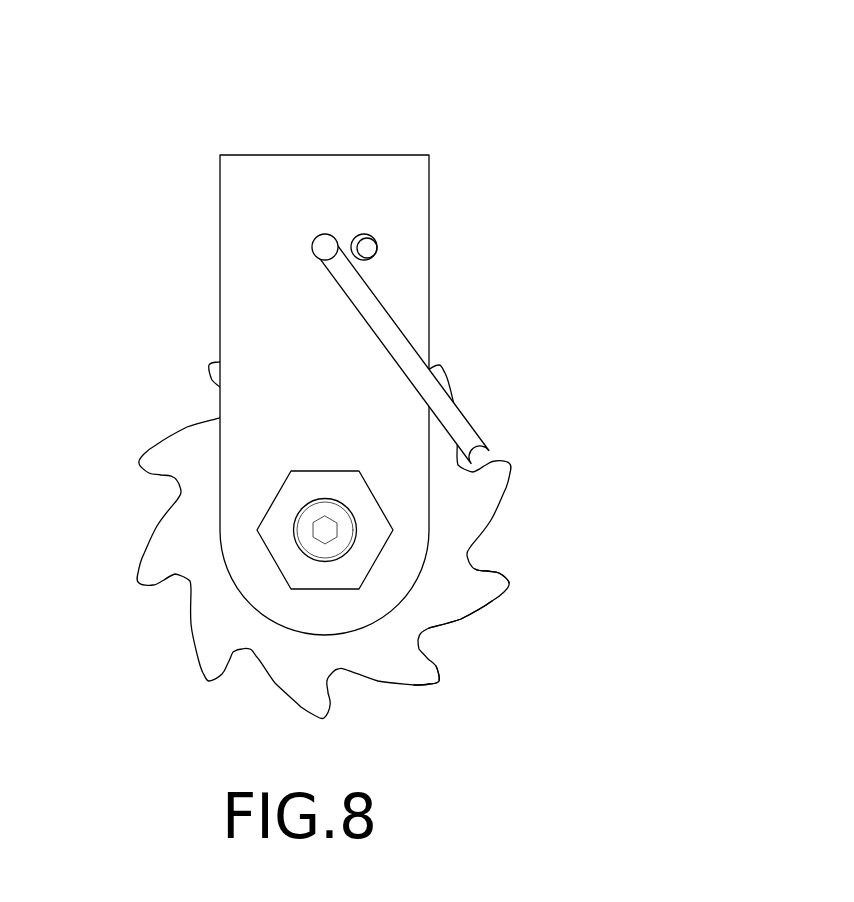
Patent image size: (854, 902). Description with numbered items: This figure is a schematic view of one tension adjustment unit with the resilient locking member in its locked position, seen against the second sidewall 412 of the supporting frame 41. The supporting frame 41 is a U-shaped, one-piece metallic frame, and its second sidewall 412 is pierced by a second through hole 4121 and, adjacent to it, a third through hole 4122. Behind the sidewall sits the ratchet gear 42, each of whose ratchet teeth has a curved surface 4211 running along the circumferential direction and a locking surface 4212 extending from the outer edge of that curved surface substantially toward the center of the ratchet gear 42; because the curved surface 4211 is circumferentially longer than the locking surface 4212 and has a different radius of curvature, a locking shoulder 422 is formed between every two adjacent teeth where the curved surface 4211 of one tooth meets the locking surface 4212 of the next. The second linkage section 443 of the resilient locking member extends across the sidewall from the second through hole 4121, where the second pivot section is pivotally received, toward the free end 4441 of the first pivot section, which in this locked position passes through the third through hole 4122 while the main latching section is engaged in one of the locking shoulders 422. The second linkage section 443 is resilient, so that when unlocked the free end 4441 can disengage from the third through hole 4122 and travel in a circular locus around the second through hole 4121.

The supporting frame 41 is at (391, 320).
The second sidewall 412 is at (260, 207).
The second through hole 4121 is at (327, 234).
The third through hole 4122 is at (386, 240).
The ratchet gear 42 is at (222, 635).
The locking surface 4212 is at (493, 574).
The curved surface 4211 is at (479, 623).
The locking shoulder 422 is at (432, 661).
The second linkage section 443 is at (396, 331).
The free end of the first pivot section 4441 is at (378, 248).